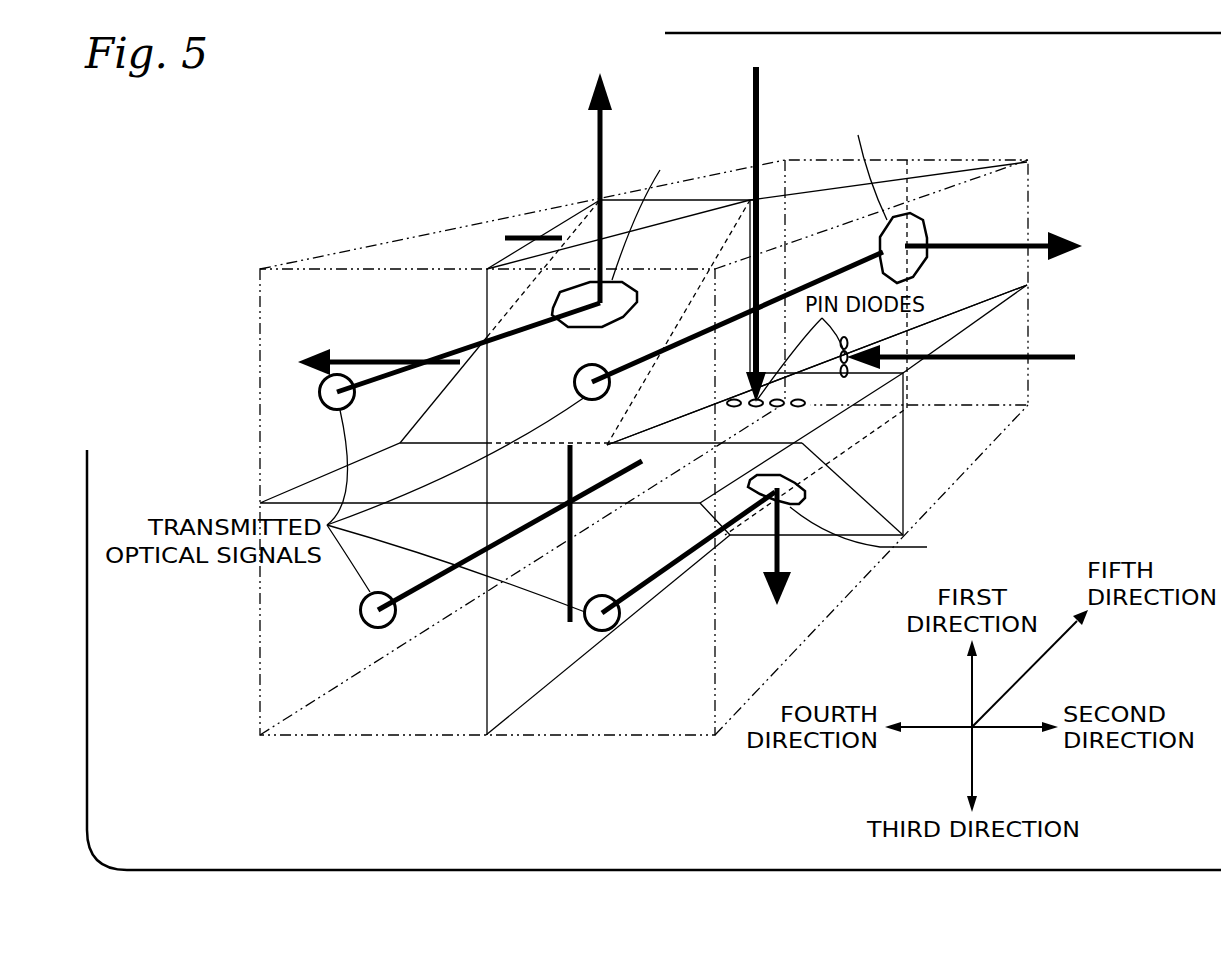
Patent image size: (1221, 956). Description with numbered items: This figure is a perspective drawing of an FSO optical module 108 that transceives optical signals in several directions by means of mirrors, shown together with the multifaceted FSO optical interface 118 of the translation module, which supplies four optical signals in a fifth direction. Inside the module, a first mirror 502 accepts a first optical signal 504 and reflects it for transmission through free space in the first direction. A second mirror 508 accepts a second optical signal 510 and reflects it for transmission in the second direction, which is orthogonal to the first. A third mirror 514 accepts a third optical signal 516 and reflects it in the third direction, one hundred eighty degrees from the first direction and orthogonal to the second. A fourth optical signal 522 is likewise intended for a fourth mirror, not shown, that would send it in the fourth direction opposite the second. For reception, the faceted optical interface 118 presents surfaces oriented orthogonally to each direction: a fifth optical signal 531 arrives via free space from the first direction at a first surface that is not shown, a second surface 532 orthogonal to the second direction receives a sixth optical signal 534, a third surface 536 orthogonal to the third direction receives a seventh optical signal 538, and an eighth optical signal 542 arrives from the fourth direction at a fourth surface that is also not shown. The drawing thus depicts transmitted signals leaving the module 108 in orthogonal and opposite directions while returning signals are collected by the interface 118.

The FSO optical module 108 is at (686, 431).
The optical interface 118 is at (1030, 170).
The first mirror 502 is at (580, 328).
The first optical signal 504 is at (455, 349).
The second mirror 508 is at (925, 222).
The second optical signal 510 is at (687, 347).
The third mirror 514 is at (808, 503).
The third optical signal 516 is at (660, 575).
The fourth optical signal 522 is at (425, 585).
The fifth optical signal 531 is at (533, 235).
The second surface 532 is at (803, 434).
The sixth optical signal 534 is at (752, 112).
The third surface 536 is at (935, 332).
The seventh optical signal 538 is at (1058, 350).
The eighth optical signal 542 is at (573, 550).